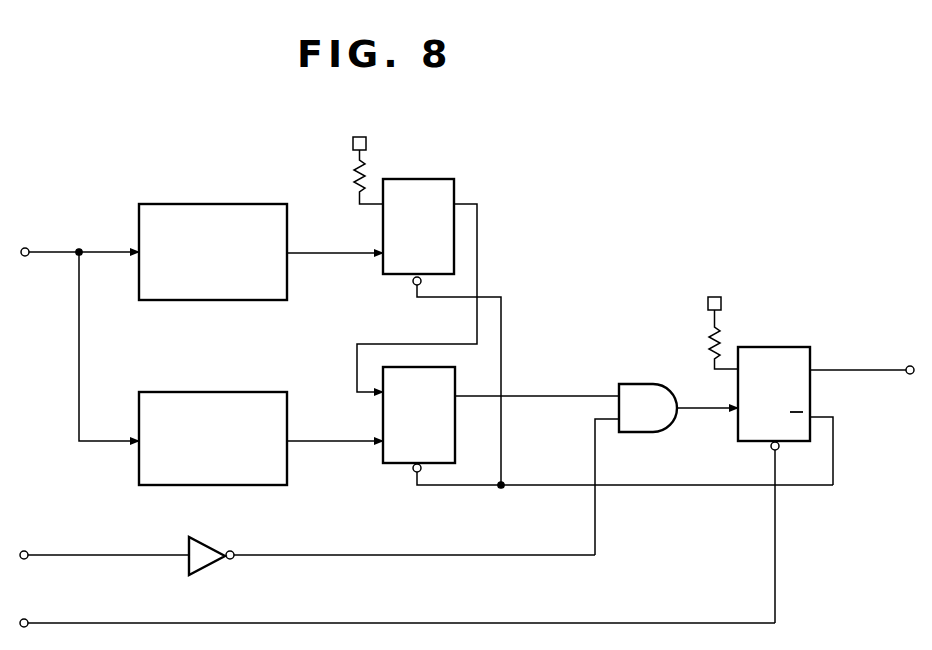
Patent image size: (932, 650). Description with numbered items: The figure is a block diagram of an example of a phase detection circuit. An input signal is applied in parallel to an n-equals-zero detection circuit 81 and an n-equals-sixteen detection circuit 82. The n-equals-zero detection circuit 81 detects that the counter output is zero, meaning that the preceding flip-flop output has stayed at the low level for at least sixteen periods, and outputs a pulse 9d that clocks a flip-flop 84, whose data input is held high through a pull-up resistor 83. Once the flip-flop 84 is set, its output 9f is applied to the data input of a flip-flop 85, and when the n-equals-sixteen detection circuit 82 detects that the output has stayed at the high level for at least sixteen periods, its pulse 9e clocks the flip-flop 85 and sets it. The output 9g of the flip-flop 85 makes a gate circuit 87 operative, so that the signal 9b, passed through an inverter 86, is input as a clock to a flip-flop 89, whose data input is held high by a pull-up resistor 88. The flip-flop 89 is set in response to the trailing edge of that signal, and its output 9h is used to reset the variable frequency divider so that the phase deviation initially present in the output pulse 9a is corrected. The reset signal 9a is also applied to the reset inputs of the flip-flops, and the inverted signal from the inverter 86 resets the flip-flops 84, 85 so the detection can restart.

The n=0 detection circuit 81 is at (190, 204).
The n=16 detection circuit 82 is at (210, 392).
The pull-up resistor 83 is at (357, 168).
The flip-flop 84 is at (437, 179).
The flip-flop 85 is at (383, 380).
The inverter 86 is at (189, 545).
The gate circuit 87 is at (643, 384).
The pull-up resistor 88 is at (713, 333).
The flip-flop 89 is at (778, 347).
The output pulse 9a is at (397, 607).
The input signal 9b is at (104, 541).
The pulse 9d is at (335, 236).
The output pulse of n=16 detection circuit 9e is at (335, 425).
The output of flip-flop 84 9f is at (427, 282).
The output of flip-flop 85 9g is at (537, 381).
The output of flip-flop 89 9h is at (862, 354).